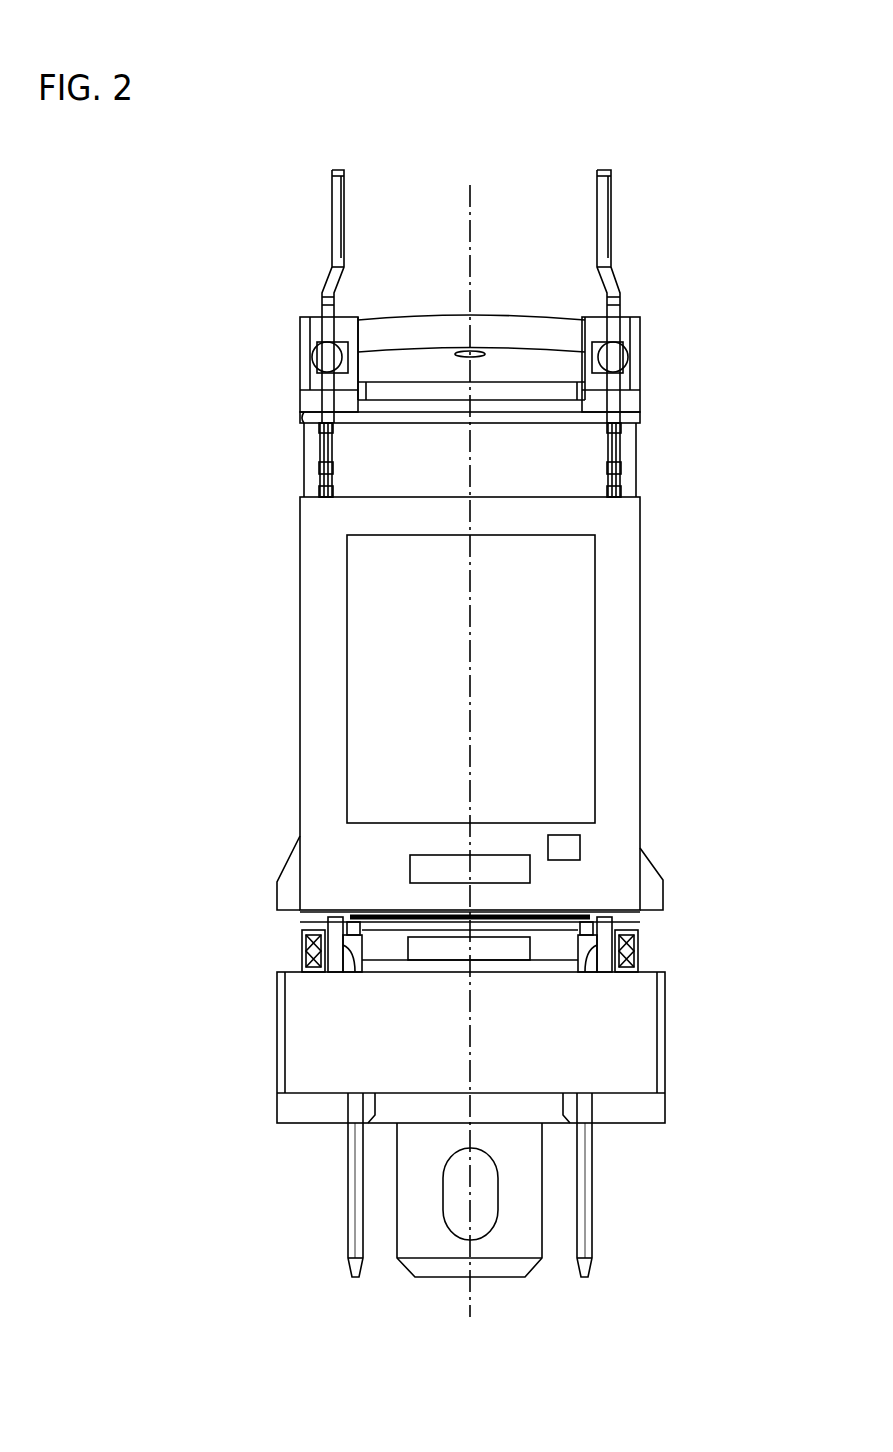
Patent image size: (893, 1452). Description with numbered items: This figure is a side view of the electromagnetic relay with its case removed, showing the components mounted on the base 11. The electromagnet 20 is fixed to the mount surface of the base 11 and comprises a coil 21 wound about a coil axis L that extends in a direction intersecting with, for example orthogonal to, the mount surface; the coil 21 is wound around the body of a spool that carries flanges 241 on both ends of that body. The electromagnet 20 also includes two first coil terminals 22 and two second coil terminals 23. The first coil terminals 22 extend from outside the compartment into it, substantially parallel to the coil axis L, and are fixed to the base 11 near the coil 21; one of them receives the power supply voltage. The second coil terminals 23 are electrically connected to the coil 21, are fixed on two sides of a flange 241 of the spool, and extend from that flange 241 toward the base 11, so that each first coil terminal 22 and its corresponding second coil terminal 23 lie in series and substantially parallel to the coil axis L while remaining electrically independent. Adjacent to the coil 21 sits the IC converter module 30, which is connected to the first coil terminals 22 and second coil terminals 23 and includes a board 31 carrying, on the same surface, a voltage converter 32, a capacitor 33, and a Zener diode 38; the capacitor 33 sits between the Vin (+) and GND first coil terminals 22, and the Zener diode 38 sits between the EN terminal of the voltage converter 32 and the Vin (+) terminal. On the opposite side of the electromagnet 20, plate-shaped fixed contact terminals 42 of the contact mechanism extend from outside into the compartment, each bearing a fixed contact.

The coil axis L is at (478, 197).
The base 11 is at (667, 1040).
The electromagnet 20 is at (658, 360).
The coil 21 is at (363, 452).
The first coil terminals 22 is at (332, 953).
The second coil terminals 23 is at (325, 455).
The IC converter module 30 is at (475, 703).
The board 31 is at (325, 646).
The voltage converter 32 is at (362, 688).
The capacitor 33 is at (423, 865).
The Zener diode 38 is at (577, 848).
The fixed contact terminals 42 is at (522, 1270).
The flanges 241 is at (397, 403).